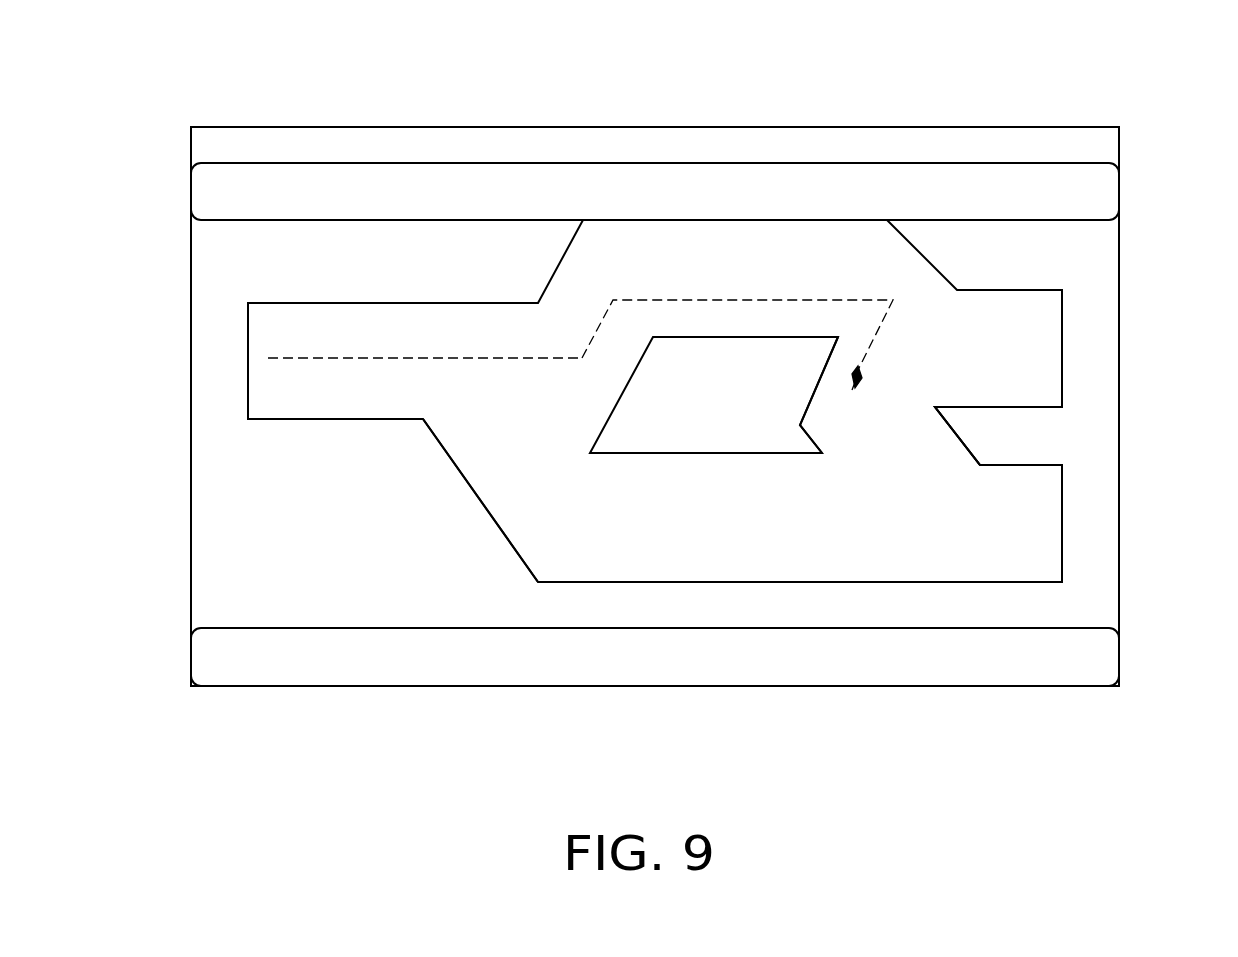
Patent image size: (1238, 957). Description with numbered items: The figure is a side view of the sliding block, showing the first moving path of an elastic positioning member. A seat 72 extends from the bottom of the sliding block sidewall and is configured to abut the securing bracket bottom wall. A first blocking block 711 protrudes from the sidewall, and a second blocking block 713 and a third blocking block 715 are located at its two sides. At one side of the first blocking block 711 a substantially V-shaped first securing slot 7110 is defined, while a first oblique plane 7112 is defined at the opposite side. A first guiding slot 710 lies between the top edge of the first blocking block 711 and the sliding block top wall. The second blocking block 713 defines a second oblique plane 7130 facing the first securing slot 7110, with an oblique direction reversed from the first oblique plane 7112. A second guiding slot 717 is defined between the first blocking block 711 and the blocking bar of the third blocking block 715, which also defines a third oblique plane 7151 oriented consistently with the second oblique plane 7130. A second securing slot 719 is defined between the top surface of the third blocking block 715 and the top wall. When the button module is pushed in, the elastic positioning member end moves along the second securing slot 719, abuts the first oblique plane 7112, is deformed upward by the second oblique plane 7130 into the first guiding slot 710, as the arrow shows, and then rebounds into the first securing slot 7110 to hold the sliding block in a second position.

The first guiding slot 710 is at (705, 270).
The seat 72 is at (713, 652).
The third blocking block 715 is at (270, 520).
The third oblique plane 7151 is at (500, 525).
The second guiding slot 717 is at (852, 556).
The second blocking block 713 is at (1025, 438).
The second oblique plane 7130 is at (963, 443).
The second securing slot 719 is at (324, 350).
The first oblique plane 7112 is at (630, 370).
The first blocking block 711 is at (770, 380).
The first securing slot 7110 is at (813, 422).